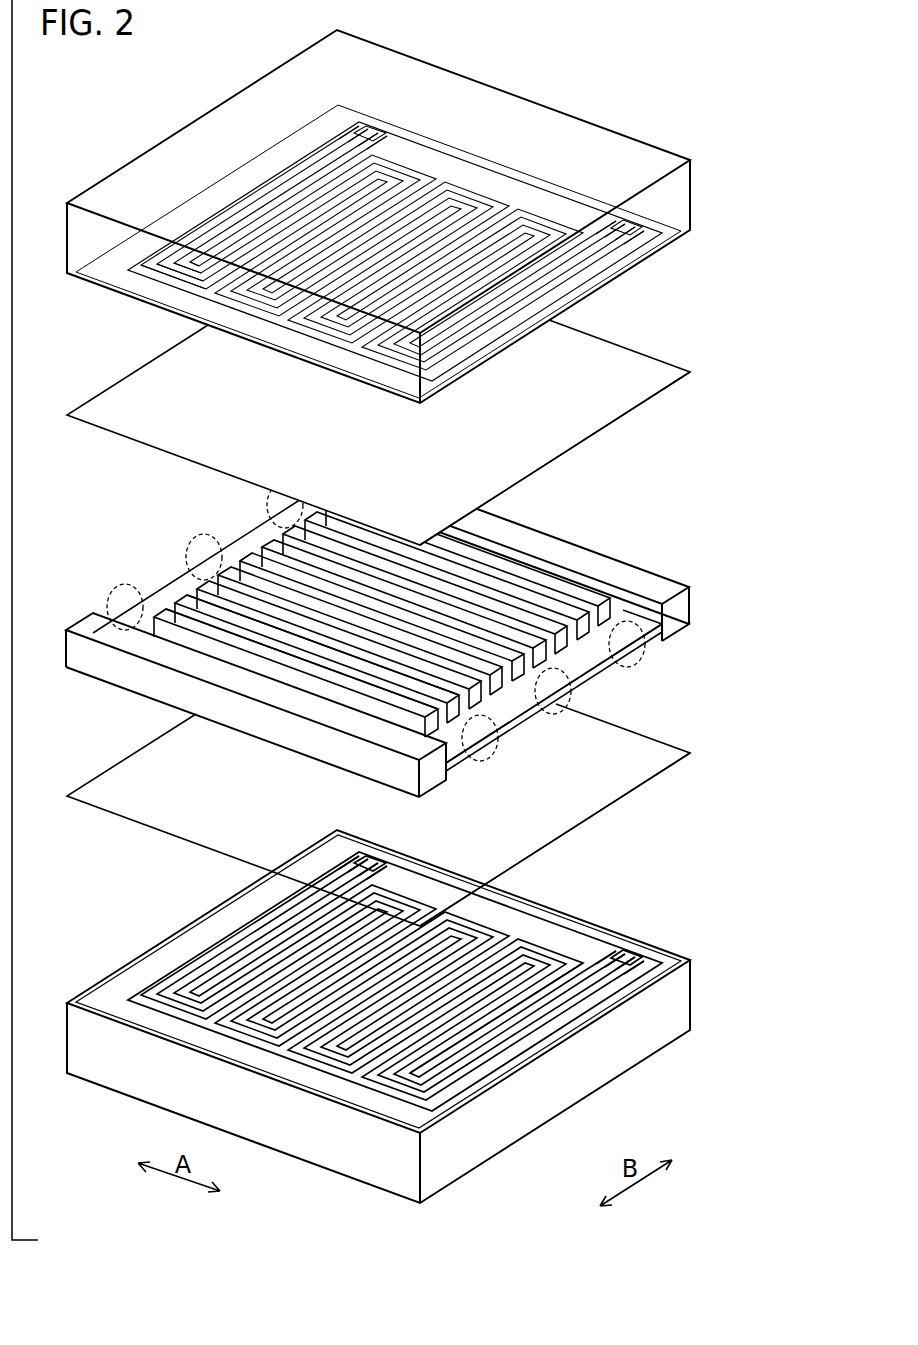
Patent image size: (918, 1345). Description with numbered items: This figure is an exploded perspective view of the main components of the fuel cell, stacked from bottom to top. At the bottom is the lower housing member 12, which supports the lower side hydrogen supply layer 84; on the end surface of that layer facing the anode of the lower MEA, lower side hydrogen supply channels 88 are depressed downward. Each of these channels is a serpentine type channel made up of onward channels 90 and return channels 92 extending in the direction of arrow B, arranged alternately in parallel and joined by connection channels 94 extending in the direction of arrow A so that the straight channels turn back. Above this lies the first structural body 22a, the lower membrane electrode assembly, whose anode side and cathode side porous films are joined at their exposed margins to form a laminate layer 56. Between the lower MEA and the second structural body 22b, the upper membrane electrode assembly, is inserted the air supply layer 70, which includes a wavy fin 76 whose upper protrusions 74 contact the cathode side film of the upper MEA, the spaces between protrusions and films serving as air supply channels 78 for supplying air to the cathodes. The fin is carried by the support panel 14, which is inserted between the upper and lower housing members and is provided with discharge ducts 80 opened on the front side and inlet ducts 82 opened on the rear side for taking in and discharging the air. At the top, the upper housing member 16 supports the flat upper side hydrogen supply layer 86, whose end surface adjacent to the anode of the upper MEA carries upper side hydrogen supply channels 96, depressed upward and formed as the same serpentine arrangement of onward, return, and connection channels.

The lower housing member 12 is at (650, 1043).
The support panel 14 is at (362, 757).
The upper housing member 16 is at (680, 202).
The first structural body 22a is at (638, 770).
The second structural body 22b is at (638, 393).
The laminate layer 56 is at (658, 373).
The air supply layer 70 is at (681, 560).
The upper protrusions 74 is at (440, 607).
The fin 76 is at (312, 686).
The air supply channels 78 is at (297, 632).
The discharge ducts 80 is at (647, 650).
The inlet ducts 82 is at (265, 496).
The lower side hydrogen supply layer 84 is at (541, 1042).
The upper side hydrogen supply layer 86 is at (633, 255).
The lower side hydrogen supply channels 88 is at (464, 1080).
The onward channels 90 is at (477, 327).
The return channels 92 is at (557, 233).
The connection channels 94 is at (375, 345).
The upper side hydrogen supply channels 96 is at (154, 285).